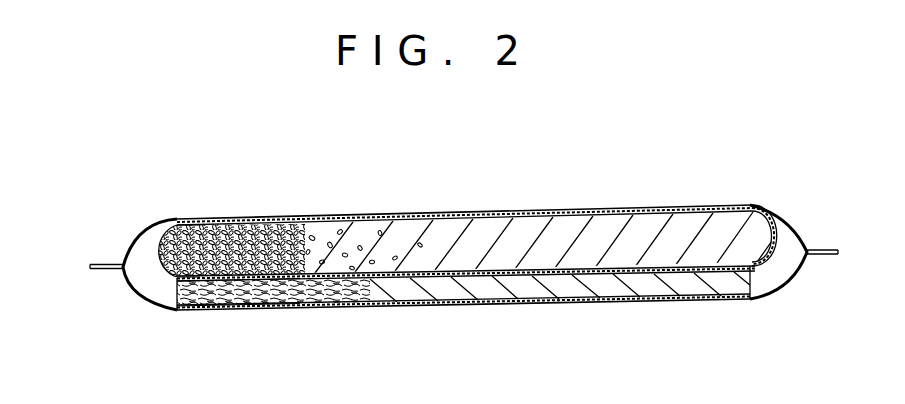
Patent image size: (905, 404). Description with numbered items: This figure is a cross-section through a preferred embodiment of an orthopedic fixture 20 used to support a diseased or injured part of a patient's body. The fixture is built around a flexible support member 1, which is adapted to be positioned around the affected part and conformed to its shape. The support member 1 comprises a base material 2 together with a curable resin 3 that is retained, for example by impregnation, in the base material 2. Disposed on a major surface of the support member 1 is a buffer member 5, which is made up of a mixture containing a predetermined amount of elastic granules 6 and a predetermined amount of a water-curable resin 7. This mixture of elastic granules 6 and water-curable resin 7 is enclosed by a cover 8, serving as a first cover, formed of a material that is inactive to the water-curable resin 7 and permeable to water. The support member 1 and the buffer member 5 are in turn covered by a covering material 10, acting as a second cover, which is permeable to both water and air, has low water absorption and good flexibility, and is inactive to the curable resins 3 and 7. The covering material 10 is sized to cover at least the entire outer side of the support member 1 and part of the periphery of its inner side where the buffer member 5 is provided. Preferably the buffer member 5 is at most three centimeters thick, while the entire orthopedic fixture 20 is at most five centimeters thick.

The support member 1 is at (398, 290).
The base material 2 is at (287, 293).
The curable resin 3 is at (215, 293).
The buffer member 5 is at (485, 247).
The elastic granules 6 is at (271, 222).
The water-curable resin 7 is at (196, 222).
The cover 8 is at (622, 218).
The covering material 10 is at (790, 222).
The orthopedic fixture 20 is at (681, 108).